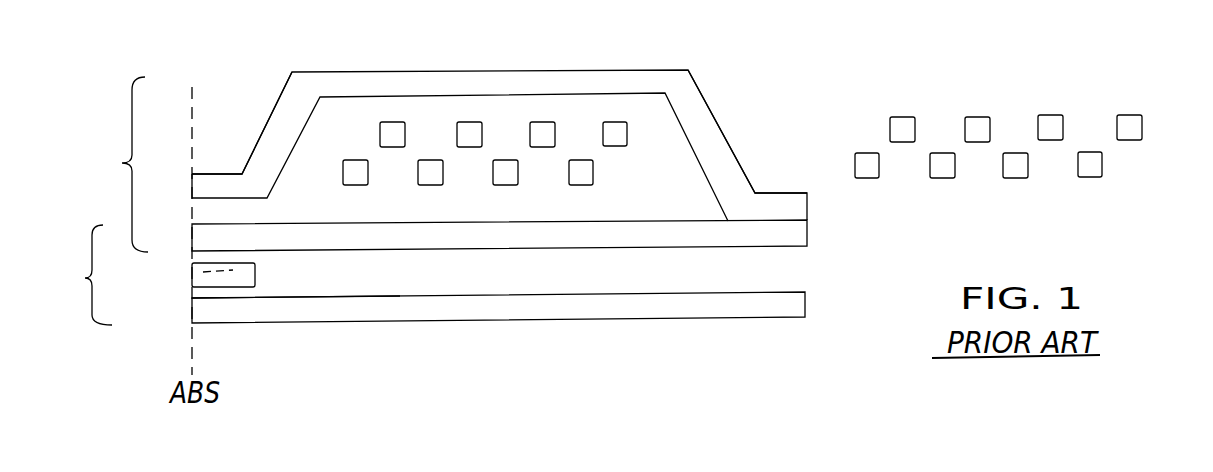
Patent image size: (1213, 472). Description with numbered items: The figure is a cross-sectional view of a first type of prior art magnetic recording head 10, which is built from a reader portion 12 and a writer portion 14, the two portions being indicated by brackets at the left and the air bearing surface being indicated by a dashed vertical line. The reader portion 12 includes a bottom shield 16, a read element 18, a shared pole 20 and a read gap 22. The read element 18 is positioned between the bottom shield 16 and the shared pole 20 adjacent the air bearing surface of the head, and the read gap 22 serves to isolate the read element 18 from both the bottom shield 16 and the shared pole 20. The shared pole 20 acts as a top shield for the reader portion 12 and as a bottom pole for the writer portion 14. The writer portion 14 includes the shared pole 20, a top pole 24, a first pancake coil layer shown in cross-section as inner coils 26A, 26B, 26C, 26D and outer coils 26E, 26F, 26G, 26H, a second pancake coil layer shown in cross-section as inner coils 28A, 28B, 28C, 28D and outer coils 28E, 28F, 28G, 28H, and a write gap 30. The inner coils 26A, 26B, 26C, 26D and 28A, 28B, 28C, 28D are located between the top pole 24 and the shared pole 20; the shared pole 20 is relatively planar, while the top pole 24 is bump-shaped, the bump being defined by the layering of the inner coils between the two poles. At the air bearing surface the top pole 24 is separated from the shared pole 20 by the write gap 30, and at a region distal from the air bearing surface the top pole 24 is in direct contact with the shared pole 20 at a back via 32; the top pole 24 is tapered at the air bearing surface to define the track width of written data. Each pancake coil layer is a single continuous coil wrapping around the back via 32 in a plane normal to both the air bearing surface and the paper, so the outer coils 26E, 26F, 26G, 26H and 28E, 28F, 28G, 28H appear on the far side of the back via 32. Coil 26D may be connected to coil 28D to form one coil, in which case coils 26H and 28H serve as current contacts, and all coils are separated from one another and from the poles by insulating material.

The magnetic recording head 10 is at (247, 68).
The reader portion 12 is at (86, 275).
The writer portion 14 is at (122, 164).
The bottom shield 16 is at (397, 305).
The read element 18 is at (193, 278).
The shared pole 20 is at (497, 235).
The read gap 22 is at (302, 282).
The top pole 24 is at (275, 133).
The inner coil 26A is at (350, 172).
The inner coil 26B is at (425, 172).
The inner coil 26C is at (500, 172).
The inner coil 26D is at (585, 173).
The outer coil 26E is at (864, 165).
The outer coil 26F is at (938, 165).
The outer coil 26G is at (1011, 165).
The outer coil 26H is at (1095, 163).
The inner coil 28A is at (382, 130).
The inner coil 28B is at (463, 128).
The inner coil 28C is at (538, 128).
The inner coil 28D is at (620, 132).
The outer coil 28E is at (893, 122).
The outer coil 28F is at (974, 124).
The outer coil 28G is at (1049, 123).
The outer coil 28H is at (1125, 123).
The write gap 30 is at (215, 215).
The back via 32 is at (715, 147).